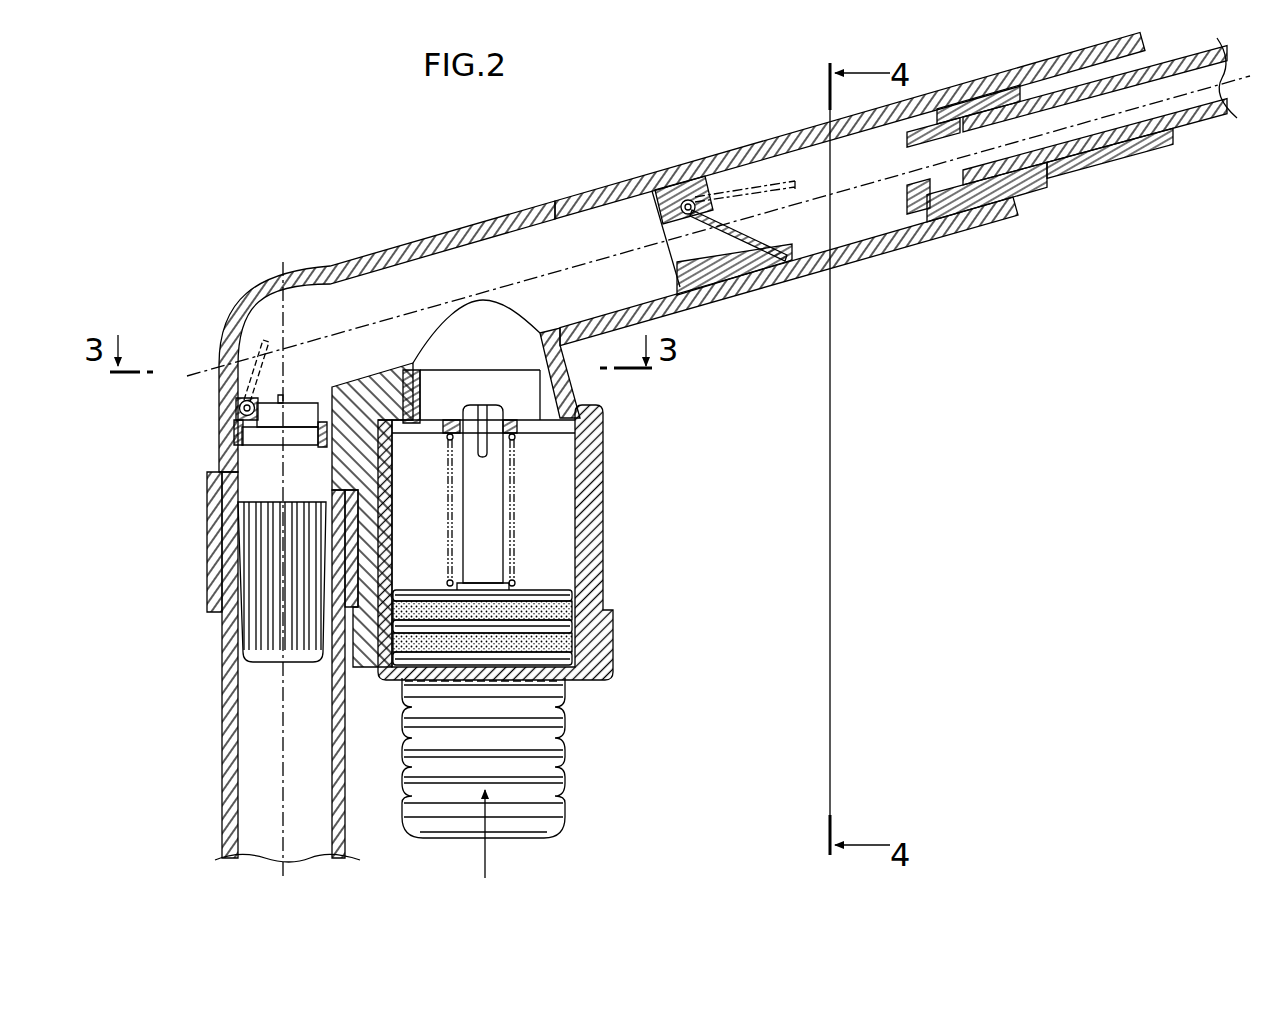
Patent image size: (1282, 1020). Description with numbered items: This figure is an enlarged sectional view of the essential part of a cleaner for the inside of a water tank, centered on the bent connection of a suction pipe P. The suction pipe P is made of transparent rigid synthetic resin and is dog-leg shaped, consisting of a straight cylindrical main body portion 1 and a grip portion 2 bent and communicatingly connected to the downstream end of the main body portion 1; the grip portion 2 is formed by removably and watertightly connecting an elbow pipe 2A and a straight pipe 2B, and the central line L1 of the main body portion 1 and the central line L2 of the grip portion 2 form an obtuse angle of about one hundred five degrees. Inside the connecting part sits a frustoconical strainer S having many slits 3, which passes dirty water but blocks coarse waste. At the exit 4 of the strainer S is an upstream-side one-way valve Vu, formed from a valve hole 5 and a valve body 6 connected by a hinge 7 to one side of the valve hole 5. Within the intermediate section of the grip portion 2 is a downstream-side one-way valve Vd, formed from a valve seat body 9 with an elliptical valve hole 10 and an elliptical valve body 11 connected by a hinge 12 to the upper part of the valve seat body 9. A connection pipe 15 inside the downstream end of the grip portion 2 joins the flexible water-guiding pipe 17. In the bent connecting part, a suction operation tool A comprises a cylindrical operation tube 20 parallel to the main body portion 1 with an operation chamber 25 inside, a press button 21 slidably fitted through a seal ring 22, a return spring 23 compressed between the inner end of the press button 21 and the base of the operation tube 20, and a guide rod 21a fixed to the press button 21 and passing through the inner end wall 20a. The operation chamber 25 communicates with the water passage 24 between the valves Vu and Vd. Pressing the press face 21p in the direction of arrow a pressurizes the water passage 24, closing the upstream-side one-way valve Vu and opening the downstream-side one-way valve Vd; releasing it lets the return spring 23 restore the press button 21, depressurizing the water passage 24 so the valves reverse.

The main body portion 1 is at (222, 716).
The grip portion 2 is at (682, 253).
The elbow pipe 2A is at (481, 232).
The straight pipe 2B is at (850, 189).
The slits 3 is at (276, 522).
The exit 4 is at (272, 440).
The valve hole 5 is at (298, 417).
The valve body 6 is at (256, 402).
The hinge 7 is at (242, 408).
The valve seat body 9 is at (687, 281).
The valve hole 10 is at (738, 250).
The valve body 11 is at (767, 243).
The hinge 12 is at (688, 204).
The connection pipe 15 is at (950, 192).
The water-guiding pipe 17 is at (1173, 116).
The operation tube 20 is at (582, 467).
The inner end wall 20a is at (453, 424).
The press button 21 is at (418, 737).
The guide rod 21a is at (487, 488).
The press face 21p is at (513, 838).
The seal ring 22 is at (570, 647).
The return spring 23 is at (512, 565).
The water passage 24 is at (545, 263).
The operation chamber 25 is at (432, 521).
The suction pipe P is at (331, 240).
The strainer S is at (234, 634).
The suction operation tool A is at (572, 771).
The arrow a is at (484, 847).
The upstream-side one-way valve Vu is at (289, 394).
The downstream-side one-way valve Vd is at (762, 235).
The central line L1 is at (283, 564).
The central line L2 is at (716, 223).